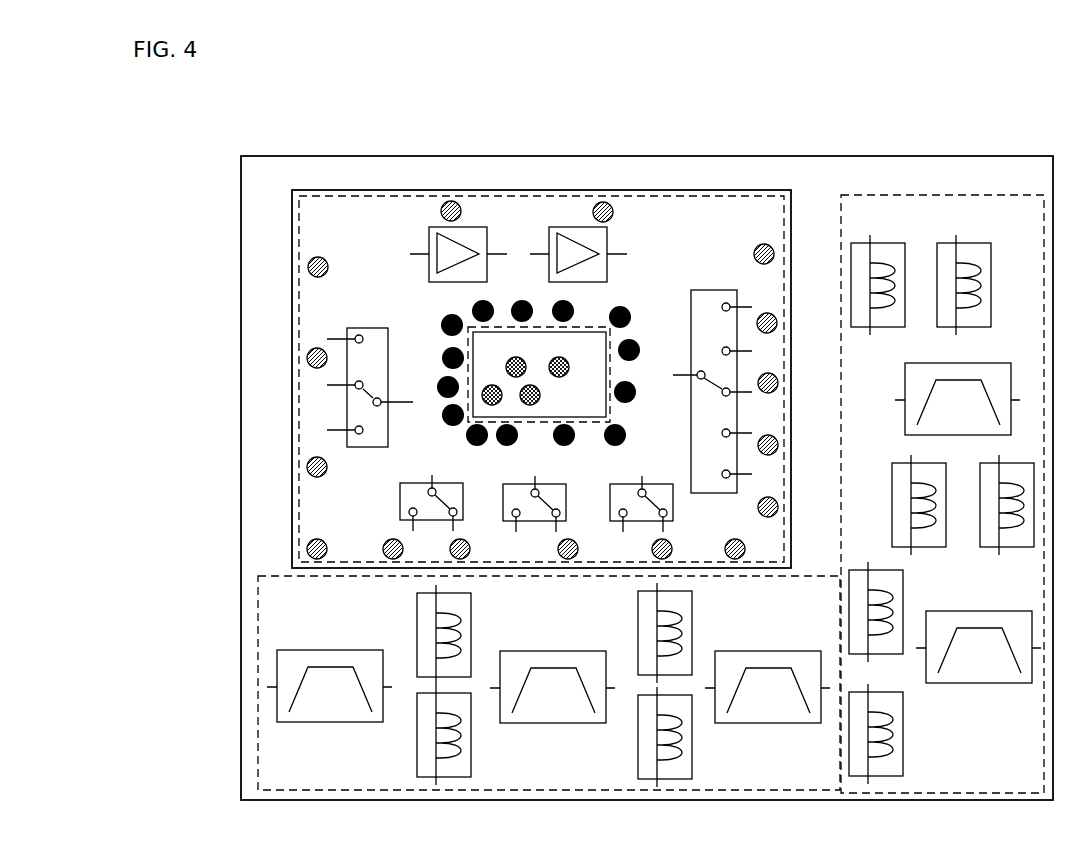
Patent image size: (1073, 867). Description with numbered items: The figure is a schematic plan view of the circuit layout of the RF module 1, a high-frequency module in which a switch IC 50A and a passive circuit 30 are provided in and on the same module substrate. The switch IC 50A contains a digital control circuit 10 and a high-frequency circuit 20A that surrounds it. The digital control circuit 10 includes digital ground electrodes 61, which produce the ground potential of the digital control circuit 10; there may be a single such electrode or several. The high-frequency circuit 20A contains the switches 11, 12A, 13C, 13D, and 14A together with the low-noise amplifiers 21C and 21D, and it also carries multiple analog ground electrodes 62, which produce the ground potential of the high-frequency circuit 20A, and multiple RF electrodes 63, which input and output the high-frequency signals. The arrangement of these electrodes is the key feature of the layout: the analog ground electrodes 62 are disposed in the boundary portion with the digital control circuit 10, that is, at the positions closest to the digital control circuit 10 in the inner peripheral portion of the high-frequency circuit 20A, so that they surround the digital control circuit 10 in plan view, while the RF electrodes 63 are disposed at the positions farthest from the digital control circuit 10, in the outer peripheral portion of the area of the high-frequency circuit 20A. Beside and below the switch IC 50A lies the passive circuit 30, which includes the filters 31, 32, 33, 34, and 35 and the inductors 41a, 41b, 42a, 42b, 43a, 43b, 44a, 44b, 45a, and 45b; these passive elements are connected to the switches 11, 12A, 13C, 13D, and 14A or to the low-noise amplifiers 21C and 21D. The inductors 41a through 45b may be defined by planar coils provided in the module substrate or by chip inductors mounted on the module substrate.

The RF module 1 is at (1000, 157).
The high-frequency circuit 20A is at (727, 196).
The switch IC 50A is at (793, 210).
The passive circuit 30 is at (802, 577).
The digital control circuit 10 is at (590, 327).
The digital ground electrode 61 is at (559, 378).
The analog ground electrode 62 is at (640, 343).
The RF electrode 63 is at (313, 458).
The low-noise amplifier 21C is at (487, 268).
The low-noise amplifier 21D is at (607, 268).
The switch 12A is at (700, 290).
The switch 13D is at (392, 348).
The switch 13C is at (547, 470).
The switch 11 is at (423, 483).
The switch 14A is at (660, 472).
The filter 31 is at (985, 363).
The filter 32 is at (982, 611).
The filter 33 is at (792, 651).
The filter 34 is at (578, 651).
The filter 35 is at (354, 650).
The inductor 41a is at (873, 243).
The inductor 41b is at (960, 243).
The inductor 42a is at (900, 463).
The inductor 42b is at (988, 463).
The inductor 43a is at (903, 595).
The inductor 43b is at (903, 723).
The inductor 44a is at (693, 611).
The inductor 44b is at (693, 744).
The inductor 45a is at (472, 612).
The inductor 45b is at (472, 745).